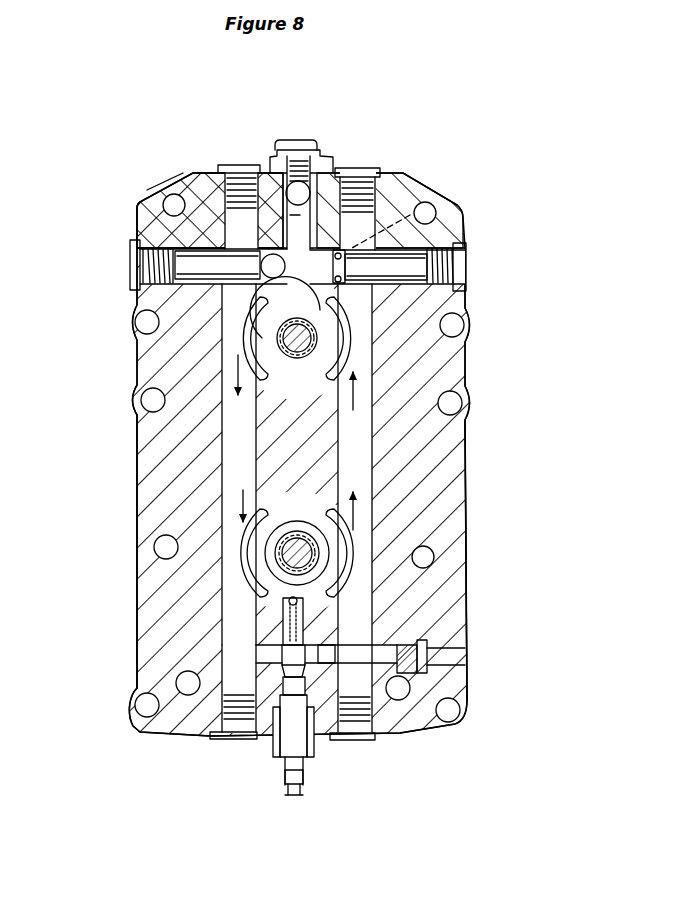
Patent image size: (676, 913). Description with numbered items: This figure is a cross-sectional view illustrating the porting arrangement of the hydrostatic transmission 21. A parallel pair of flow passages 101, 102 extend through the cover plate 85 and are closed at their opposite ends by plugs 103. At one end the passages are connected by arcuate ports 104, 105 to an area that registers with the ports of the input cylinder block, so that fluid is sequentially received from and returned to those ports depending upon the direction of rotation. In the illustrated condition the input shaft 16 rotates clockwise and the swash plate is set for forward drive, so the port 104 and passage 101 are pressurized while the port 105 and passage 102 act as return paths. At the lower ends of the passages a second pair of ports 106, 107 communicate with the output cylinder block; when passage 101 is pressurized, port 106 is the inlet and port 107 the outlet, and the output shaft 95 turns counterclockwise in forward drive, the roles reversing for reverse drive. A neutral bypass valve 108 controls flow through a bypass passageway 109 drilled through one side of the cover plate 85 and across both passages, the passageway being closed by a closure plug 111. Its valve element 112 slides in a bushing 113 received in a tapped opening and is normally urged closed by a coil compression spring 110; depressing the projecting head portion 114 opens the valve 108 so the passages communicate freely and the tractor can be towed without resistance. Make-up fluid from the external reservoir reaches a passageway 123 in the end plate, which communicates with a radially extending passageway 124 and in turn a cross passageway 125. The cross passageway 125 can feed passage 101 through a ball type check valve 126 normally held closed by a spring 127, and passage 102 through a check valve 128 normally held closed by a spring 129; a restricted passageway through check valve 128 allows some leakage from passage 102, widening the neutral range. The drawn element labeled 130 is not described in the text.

The cover plate 85 is at (128, 405).
The hydrostatic transmission 21 is at (100, 485).
The input shaft 16 is at (282, 330).
The output shaft 95 is at (282, 650).
The flow passage 101 is at (222, 429).
The flow passage 102 is at (372, 470).
The plugs 103 is at (229, 165).
The arcuate port 104 is at (240, 352).
The arcuate port 105 is at (350, 362).
The port 106 is at (248, 556).
The port 107 is at (340, 575).
The neutral bypass valve 108 is at (255, 822).
The bypass passageway 109 is at (273, 660).
The coil compression spring 110 is at (433, 674).
The closure plug 111 is at (427, 656).
The valve element 112 is at (297, 700).
The bushing 113 is at (305, 786).
The projecting head portion 114 is at (293, 786).
The passageway 123 is at (320, 255).
The radially extending passageway 124 is at (270, 253).
The cross passageway 125 is at (307, 186).
The ball type check valve 126 is at (190, 258).
The spring 127 is at (158, 210).
The check valve 128 is at (368, 224).
The spring 129 is at (478, 318).
The body chamfer 130 is at (430, 205).